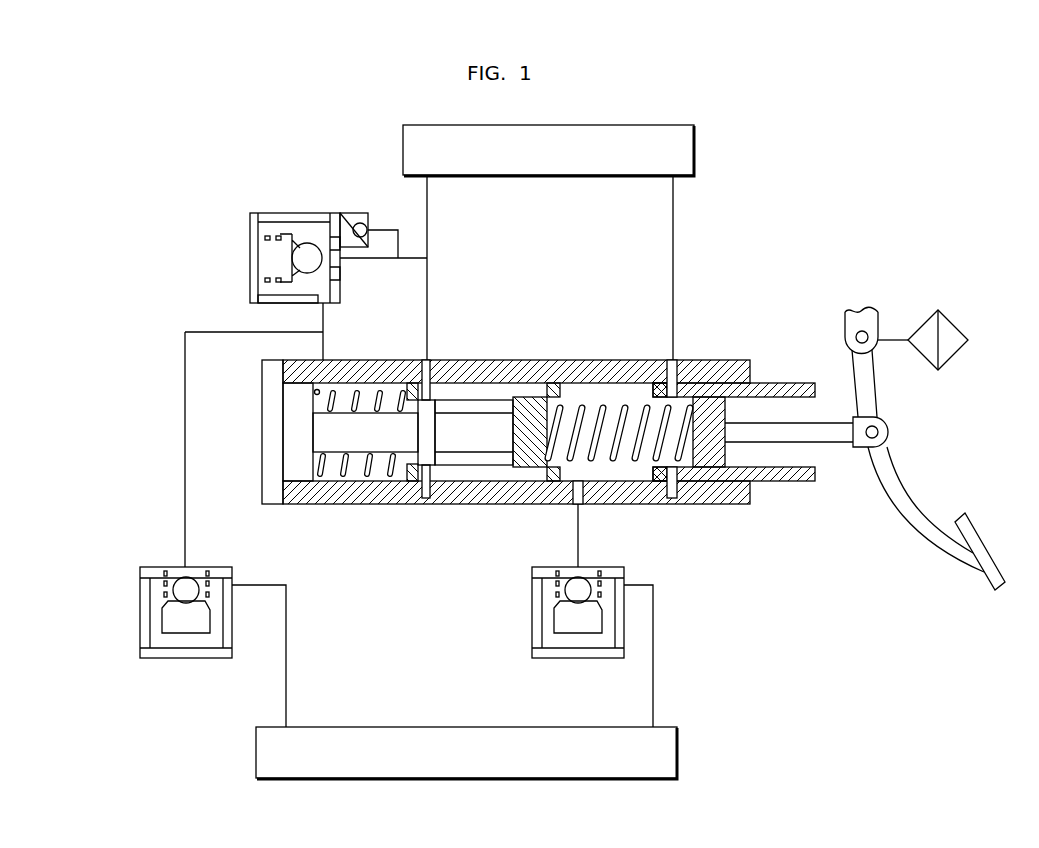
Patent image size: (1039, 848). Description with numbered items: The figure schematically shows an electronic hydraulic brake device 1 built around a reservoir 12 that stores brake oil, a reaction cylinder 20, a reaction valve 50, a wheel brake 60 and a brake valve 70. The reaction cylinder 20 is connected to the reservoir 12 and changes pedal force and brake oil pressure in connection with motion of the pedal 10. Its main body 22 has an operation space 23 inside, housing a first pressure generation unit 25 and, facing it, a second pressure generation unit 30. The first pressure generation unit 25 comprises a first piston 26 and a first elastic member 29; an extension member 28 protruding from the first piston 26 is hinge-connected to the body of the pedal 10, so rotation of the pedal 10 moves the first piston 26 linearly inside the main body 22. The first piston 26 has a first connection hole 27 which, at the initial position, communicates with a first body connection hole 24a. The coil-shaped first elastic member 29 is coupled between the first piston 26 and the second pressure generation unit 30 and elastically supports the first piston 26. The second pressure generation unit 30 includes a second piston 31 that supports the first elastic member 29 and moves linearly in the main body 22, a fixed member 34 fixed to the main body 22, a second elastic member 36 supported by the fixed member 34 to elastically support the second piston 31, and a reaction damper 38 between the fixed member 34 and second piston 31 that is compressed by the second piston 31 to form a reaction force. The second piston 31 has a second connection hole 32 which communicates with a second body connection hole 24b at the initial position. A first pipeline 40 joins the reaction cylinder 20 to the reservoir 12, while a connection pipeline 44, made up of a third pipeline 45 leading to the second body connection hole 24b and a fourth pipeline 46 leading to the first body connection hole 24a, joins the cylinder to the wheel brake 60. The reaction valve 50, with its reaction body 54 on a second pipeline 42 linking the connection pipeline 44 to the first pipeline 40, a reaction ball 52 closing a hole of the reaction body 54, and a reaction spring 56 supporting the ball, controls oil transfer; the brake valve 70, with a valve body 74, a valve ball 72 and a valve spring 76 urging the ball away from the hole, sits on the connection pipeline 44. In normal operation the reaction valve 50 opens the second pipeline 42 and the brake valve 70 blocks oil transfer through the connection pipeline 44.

The electronic hydraulic brake device 1 is at (892, 152).
The pedal 10 is at (930, 474).
The reservoir 12 is at (697, 139).
The reaction cylinder 20 is at (498, 421).
The main body 22 is at (721, 512).
The operation space 23 is at (608, 399).
The first body connection hole 24a is at (689, 368).
The second body connection hole 24b is at (422, 370).
The first pressure generation unit 25 is at (779, 362).
The first piston 26 is at (722, 455).
The first connection hole 27 is at (650, 388).
The extension member 28 is at (828, 437).
The first elastic member 29 is at (583, 400).
The second pressure generation unit 30 is at (323, 446).
The second piston 31 is at (471, 385).
The second connection hole 32 is at (422, 398).
The fixed member 34 is at (298, 428).
The second elastic member 36 is at (345, 477).
The reaction damper 38 is at (478, 440).
The first pipeline 40 is at (427, 246).
The second pipeline 42 is at (322, 318).
The connection pipeline 44 is at (442, 656).
The third pipeline 45 is at (286, 679).
The fourth pipeline 46 is at (653, 698).
The reaction valve 50 is at (296, 227).
The reaction ball 52 is at (312, 248).
The reaction body 54 is at (290, 245).
The reaction spring 56 is at (266, 236).
The wheel brake 60 is at (678, 743).
The brake valve 70 is at (162, 622).
The valve ball 72 is at (184, 590).
The valve body 74 is at (180, 625).
The valve spring 76 is at (222, 568).